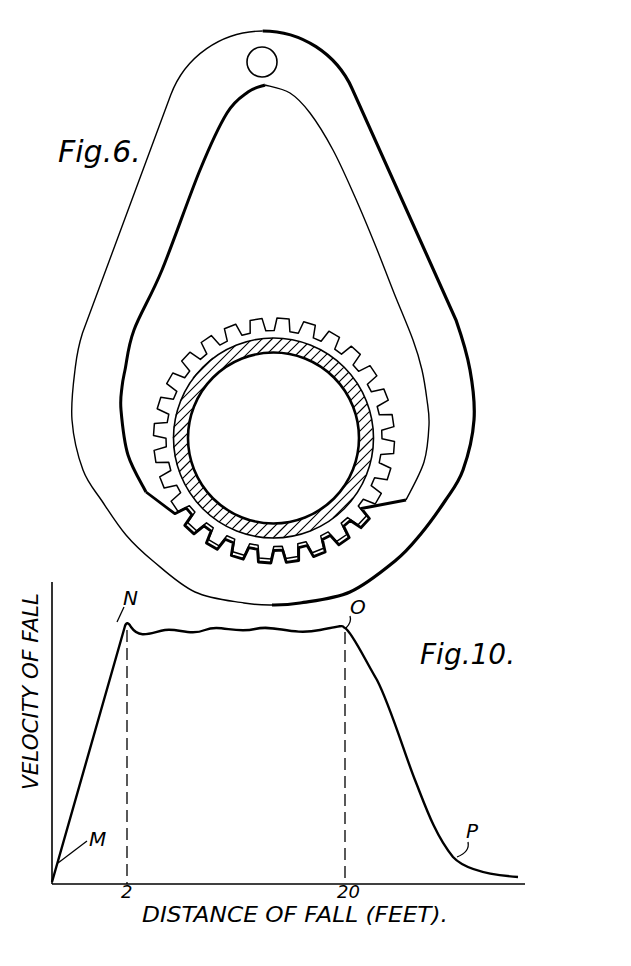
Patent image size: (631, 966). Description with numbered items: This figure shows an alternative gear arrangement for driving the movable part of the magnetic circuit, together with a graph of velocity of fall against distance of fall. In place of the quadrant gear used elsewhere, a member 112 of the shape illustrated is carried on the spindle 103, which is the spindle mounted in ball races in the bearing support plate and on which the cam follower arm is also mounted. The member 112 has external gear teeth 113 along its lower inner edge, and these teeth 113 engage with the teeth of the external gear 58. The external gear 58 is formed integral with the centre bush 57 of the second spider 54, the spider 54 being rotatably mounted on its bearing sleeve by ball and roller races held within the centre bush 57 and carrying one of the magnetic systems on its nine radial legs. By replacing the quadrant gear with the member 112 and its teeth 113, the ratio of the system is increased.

The spindle 103 is at (268, 62).
The member 112 is at (445, 355).
The external gear teeth 113 is at (338, 550).
The external gear 58 is at (338, 342).
The second spider 54 is at (217, 366).
The centre bush 57 is at (352, 404).